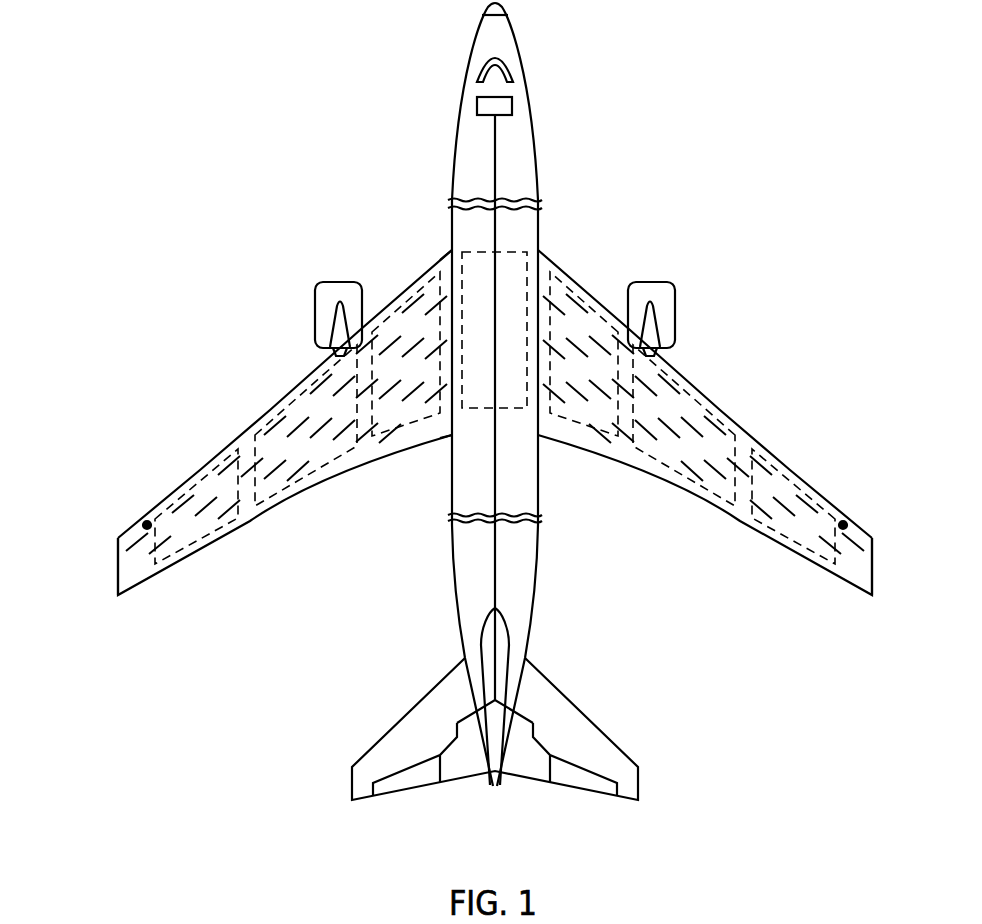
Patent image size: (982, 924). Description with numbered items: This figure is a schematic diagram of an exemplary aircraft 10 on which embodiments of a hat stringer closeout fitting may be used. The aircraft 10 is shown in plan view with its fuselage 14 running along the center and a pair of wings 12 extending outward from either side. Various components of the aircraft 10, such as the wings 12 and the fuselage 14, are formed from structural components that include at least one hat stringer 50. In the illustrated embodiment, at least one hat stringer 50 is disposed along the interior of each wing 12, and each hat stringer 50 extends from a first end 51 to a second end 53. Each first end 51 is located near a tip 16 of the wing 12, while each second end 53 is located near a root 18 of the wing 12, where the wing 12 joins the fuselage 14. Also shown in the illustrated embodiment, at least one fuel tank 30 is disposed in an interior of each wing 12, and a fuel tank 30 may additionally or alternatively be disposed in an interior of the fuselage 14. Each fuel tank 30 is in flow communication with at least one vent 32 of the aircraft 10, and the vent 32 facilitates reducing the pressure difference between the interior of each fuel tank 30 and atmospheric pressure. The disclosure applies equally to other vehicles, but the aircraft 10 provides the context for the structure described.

The aircraft 10 is at (300, 84).
The wing 12 is at (270, 414).
The fuselage 14 is at (452, 549).
The tip 16 is at (113, 553).
The root 18 is at (447, 246).
The fuel tank 30 is at (522, 248).
The vent 32 is at (145, 521).
The hat stringer 50 is at (189, 503).
The first end 51 is at (136, 570).
The second end 53 is at (443, 309).